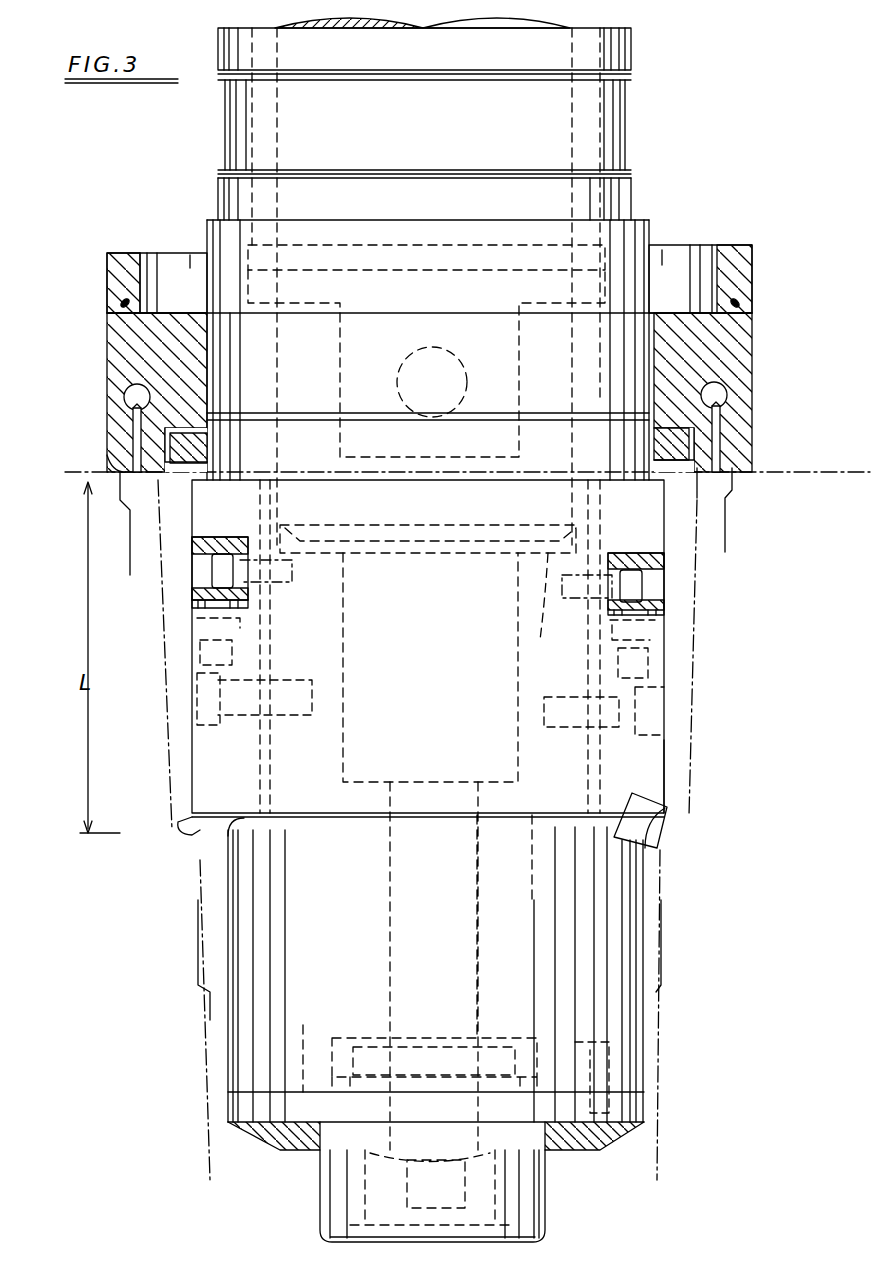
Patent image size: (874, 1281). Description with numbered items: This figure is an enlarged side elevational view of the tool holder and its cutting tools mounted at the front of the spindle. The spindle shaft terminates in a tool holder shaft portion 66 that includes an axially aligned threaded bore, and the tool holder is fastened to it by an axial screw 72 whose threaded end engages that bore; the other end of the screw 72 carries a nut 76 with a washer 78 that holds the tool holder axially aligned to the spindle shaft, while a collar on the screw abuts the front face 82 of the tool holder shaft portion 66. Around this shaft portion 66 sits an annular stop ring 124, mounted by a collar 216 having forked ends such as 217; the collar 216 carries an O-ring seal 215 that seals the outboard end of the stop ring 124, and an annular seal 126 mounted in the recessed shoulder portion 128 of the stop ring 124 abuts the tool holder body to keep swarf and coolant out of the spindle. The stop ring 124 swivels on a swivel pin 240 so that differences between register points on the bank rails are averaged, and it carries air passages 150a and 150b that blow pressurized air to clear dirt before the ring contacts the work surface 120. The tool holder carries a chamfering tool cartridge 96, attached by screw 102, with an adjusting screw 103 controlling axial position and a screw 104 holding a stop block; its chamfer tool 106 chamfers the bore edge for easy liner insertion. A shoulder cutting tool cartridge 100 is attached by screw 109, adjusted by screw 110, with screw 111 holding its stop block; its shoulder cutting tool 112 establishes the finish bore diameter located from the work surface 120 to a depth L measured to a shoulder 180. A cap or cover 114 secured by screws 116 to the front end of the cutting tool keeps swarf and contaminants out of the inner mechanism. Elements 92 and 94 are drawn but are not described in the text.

The tool holder shaft portion 66 is at (478, 291).
The axial screw 72 is at (405, 955).
The nut 76 is at (432, 1100).
The washer 78 is at (368, 1052).
The front face 82 is at (470, 545).
The rotor body 92 is at (400, 550).
The rotor wall 94 is at (552, 597).
The chamfering tool cartridge 96 is at (652, 778).
The shoulder cutting tool cartridge 100 is at (207, 748).
The screw 102 is at (652, 712).
The adjusting screw 103 is at (650, 626).
The screw 104 is at (630, 588).
The chamfer tool 106 is at (660, 835).
The screw 109 is at (203, 700).
The screw 110 is at (198, 622).
The screw 111 is at (215, 573).
The shoulder cutting tool 112 is at (216, 826).
The cap or cover 114 is at (282, 1142).
The screws 116 is at (608, 1146).
The work surface 120 is at (112, 458).
The annular stop ring 124 is at (740, 470).
The annular seal 126 is at (200, 451).
The recessed shoulder portion 128 is at (652, 433).
The air passage 150a is at (128, 428).
The air passage 150b is at (720, 437).
The shoulder 180 is at (183, 828).
The O-ring seal 215 is at (740, 300).
The collar 216 is at (734, 244).
The forked end 217 is at (352, 366).
The swivel pin 240 is at (448, 368).